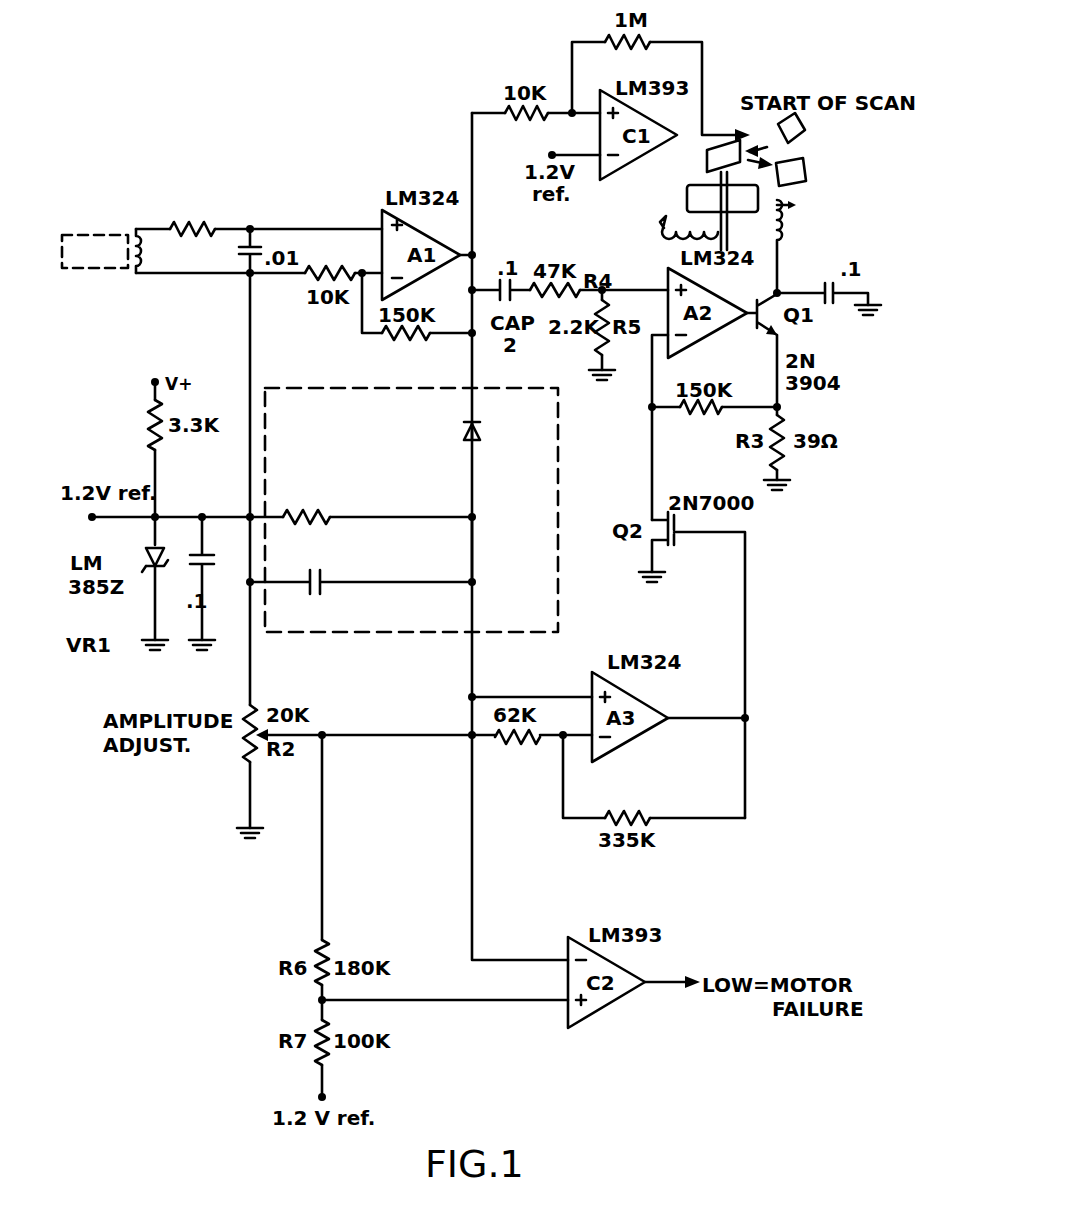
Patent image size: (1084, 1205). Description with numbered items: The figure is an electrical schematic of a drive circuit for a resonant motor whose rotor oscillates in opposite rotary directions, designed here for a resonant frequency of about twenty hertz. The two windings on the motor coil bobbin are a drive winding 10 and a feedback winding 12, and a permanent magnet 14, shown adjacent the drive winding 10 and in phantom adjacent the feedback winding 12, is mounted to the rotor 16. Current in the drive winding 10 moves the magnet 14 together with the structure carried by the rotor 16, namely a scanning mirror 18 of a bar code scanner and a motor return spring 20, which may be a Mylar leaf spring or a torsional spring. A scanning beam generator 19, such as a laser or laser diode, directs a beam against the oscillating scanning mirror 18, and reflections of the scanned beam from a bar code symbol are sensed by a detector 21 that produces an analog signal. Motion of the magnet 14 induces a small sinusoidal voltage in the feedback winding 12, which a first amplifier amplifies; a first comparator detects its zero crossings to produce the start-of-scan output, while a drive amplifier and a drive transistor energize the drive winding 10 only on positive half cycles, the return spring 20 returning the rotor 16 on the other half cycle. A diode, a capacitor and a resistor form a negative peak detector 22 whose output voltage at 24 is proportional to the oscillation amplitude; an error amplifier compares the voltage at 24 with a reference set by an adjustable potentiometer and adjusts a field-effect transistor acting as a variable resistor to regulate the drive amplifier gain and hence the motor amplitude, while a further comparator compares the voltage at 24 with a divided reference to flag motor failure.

The drive winding 10 is at (783, 232).
The feedback winding 12 is at (136, 232).
The magnet 14 is at (94, 272).
The rotor 16 is at (729, 236).
The scanning mirror 18 is at (707, 165).
The scanning beam generator 19 is at (805, 130).
The return spring 20 is at (670, 236).
The detector 21 is at (806, 170).
The negative peak detector 22 is at (358, 447).
The peak detector output 24 is at (474, 540).